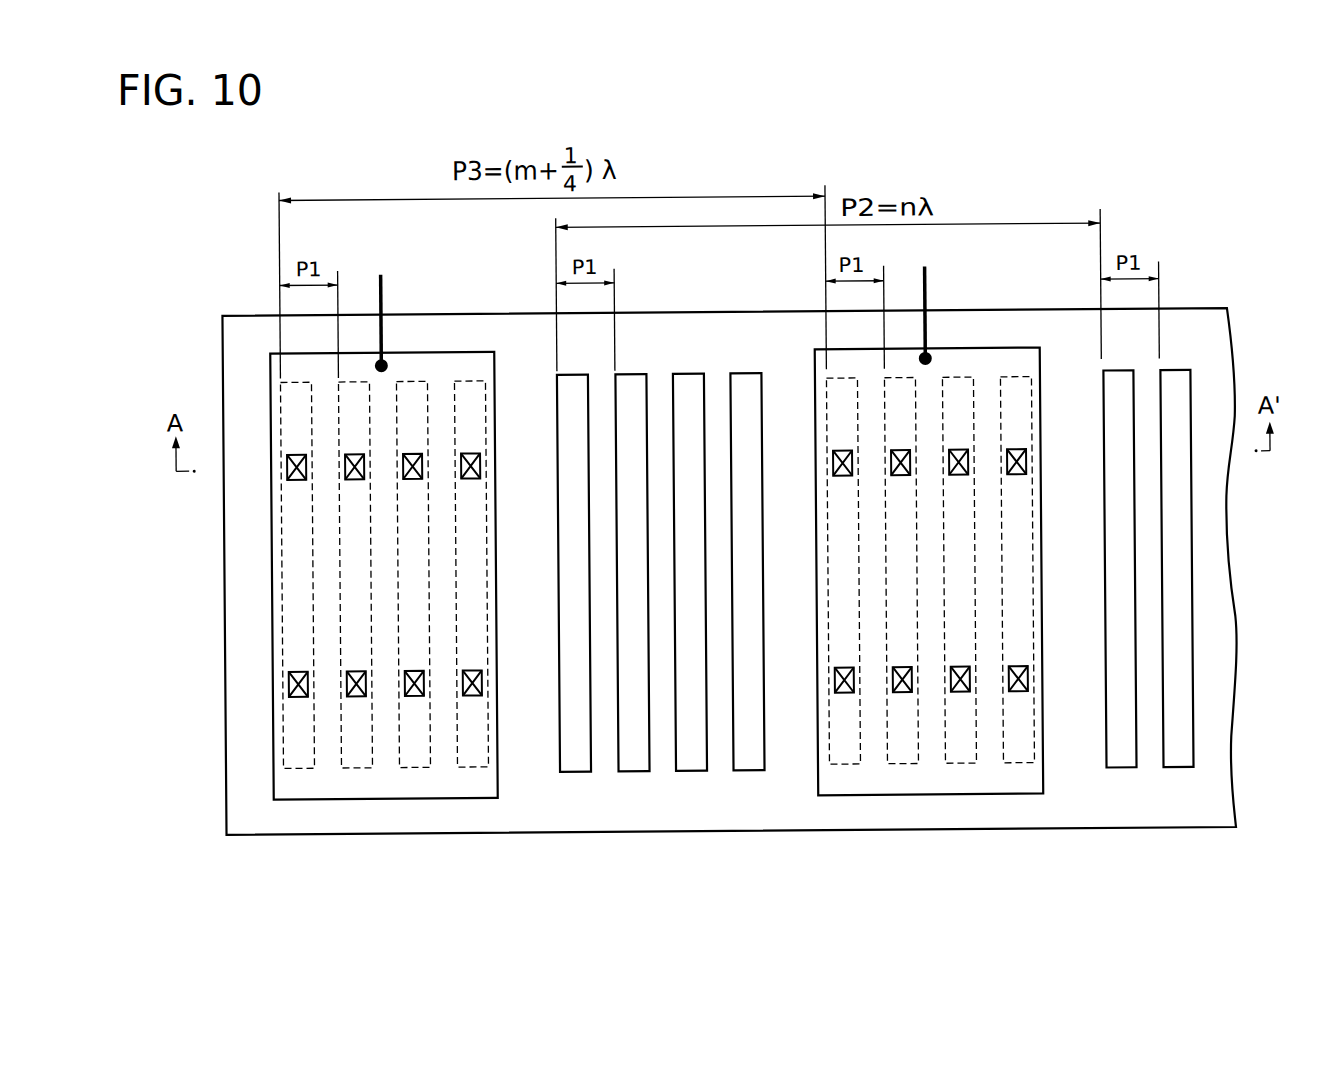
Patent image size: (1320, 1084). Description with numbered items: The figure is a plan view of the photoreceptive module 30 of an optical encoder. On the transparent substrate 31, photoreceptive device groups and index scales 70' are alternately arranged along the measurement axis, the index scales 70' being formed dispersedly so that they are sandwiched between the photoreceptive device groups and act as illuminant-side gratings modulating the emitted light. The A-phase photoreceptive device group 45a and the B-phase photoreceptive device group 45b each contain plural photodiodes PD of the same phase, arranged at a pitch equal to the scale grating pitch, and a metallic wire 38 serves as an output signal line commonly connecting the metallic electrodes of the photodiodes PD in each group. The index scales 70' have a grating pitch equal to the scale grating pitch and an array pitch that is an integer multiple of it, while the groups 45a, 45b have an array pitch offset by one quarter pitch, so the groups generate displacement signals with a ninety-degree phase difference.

The photoreceptive module 30 is at (668, 868).
The transparent substrate 31 is at (1150, 818).
The metallic wire 38 is at (272, 612).
The photoreceptive device group 45a is at (384, 576).
The photoreceptive device group 45b is at (928, 796).
The index scale 70' is at (875, 512).
The photodiode PD is at (472, 765).